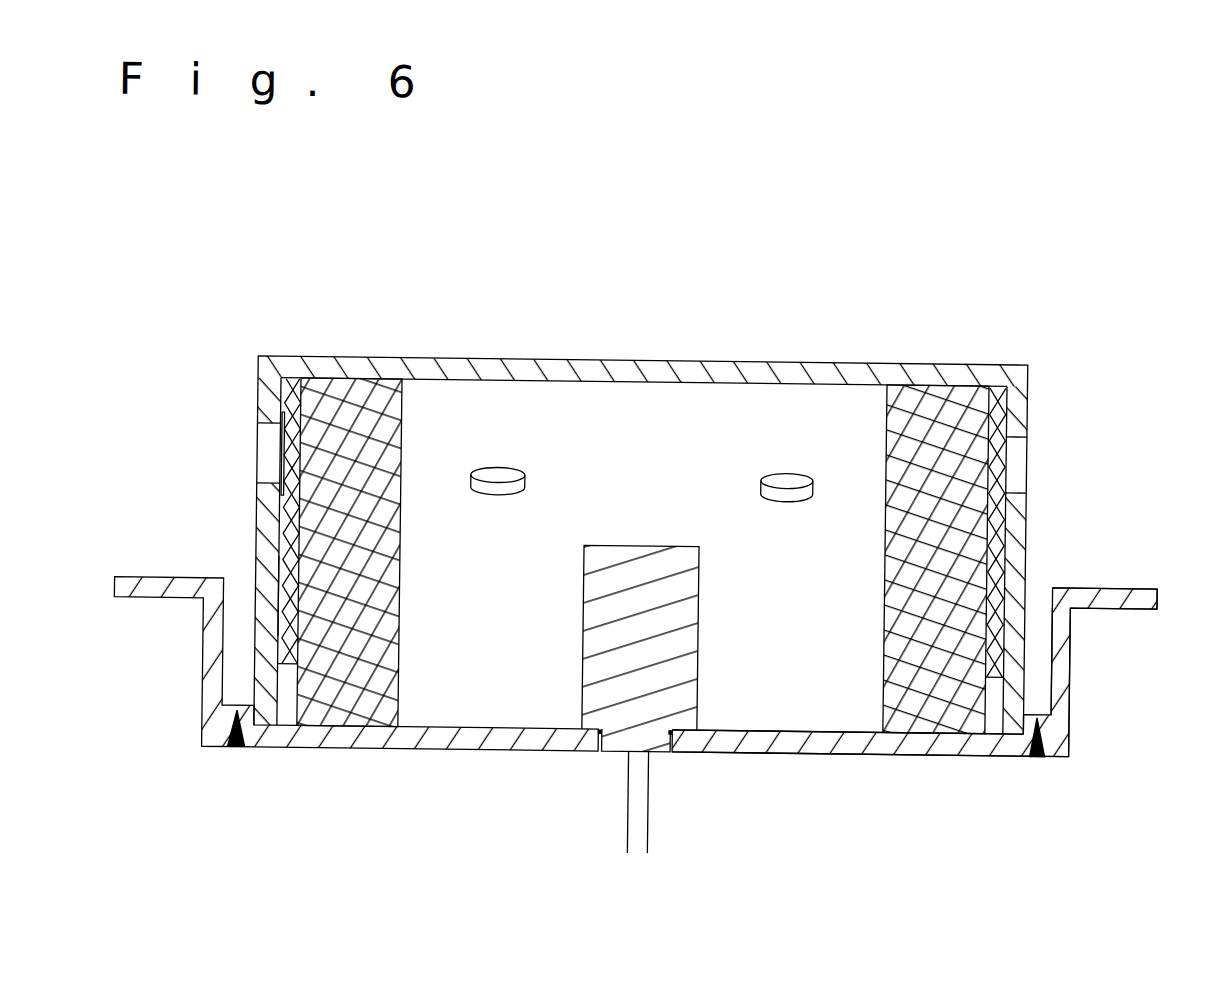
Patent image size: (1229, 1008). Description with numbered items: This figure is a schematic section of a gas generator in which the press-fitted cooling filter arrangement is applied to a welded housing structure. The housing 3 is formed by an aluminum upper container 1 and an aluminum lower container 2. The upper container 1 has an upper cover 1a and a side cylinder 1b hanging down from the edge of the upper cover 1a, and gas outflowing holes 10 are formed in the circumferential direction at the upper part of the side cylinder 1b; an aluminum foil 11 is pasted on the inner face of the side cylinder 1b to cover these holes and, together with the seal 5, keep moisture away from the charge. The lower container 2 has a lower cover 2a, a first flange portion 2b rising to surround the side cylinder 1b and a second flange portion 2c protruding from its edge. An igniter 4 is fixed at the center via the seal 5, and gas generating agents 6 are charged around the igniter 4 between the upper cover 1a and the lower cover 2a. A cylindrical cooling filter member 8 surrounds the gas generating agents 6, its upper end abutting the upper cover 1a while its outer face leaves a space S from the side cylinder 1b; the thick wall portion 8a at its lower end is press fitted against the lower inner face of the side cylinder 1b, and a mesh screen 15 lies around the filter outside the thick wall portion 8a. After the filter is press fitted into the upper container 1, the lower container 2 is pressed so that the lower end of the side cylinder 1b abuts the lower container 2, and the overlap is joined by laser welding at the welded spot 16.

The upper container 1 is at (1026, 360).
The upper cover 1a is at (875, 364).
The side cylinder 1b is at (1023, 535).
The lower container 2 is at (1080, 770).
The lower cover 2a is at (764, 750).
The first flange portion 2b is at (1062, 668).
The second flange portion 2c is at (1124, 584).
The housing 3 is at (985, 304).
The igniter 4 is at (591, 664).
The seal 5 is at (592, 751).
The gas generating agents 6 is at (504, 474).
The cooling filter member 8 is at (366, 385).
The thick wall portion 8a is at (290, 694).
The gas outflowing holes 10 is at (257, 452).
The aluminum foil 11 is at (281, 496).
The mesh screen 15 is at (283, 664).
The space S is at (283, 614).
The welded spot 16 is at (241, 752).